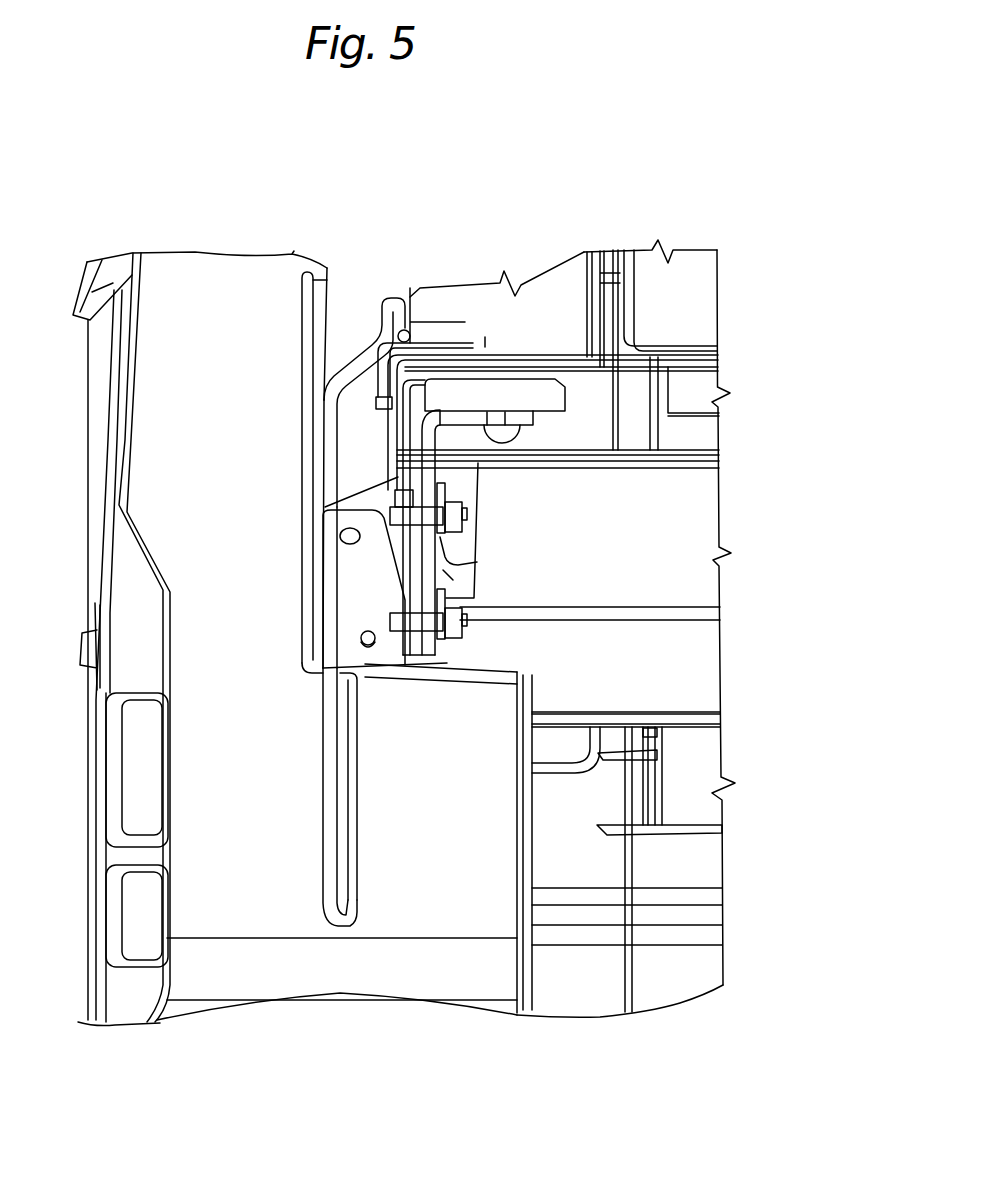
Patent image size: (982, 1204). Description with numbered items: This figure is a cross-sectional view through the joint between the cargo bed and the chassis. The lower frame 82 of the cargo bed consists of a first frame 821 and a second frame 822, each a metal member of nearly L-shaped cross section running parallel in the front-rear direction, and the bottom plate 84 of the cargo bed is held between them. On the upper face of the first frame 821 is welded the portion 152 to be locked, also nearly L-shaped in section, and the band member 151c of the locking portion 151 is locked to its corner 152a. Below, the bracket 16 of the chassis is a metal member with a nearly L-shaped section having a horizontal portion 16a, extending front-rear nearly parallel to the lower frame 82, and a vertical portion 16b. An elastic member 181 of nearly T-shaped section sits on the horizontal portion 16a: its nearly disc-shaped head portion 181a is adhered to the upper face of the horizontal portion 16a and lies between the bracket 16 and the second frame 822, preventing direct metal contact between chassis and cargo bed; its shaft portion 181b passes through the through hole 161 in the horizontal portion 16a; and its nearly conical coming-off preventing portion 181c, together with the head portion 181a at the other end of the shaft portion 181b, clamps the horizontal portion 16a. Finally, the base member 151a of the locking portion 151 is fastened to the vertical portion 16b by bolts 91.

The locking portion 151 is at (311, 366).
The base member 151a is at (380, 470).
The band member 151c is at (353, 487).
The portion to be locked 152 is at (393, 300).
The corner 152a is at (436, 360).
The lower frame 82 is at (611, 552).
The first frame 821 is at (488, 374).
The second frame 822 is at (492, 362).
The bottom plate 84 is at (632, 367).
The elastic member 181 is at (637, 412).
The head portion 181a is at (566, 398).
The shaft portion 181b is at (566, 408).
The coming-off preventing portion 181c is at (562, 452).
The through hole 161 is at (462, 432).
The bracket 16 is at (600, 698).
The horizontal portion 16a is at (440, 470).
The vertical portion 16b is at (478, 538).
The bolts 91 is at (468, 518).